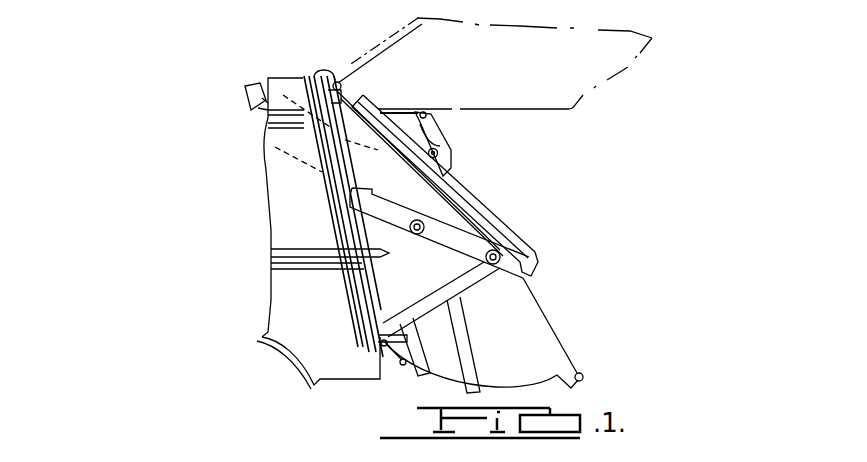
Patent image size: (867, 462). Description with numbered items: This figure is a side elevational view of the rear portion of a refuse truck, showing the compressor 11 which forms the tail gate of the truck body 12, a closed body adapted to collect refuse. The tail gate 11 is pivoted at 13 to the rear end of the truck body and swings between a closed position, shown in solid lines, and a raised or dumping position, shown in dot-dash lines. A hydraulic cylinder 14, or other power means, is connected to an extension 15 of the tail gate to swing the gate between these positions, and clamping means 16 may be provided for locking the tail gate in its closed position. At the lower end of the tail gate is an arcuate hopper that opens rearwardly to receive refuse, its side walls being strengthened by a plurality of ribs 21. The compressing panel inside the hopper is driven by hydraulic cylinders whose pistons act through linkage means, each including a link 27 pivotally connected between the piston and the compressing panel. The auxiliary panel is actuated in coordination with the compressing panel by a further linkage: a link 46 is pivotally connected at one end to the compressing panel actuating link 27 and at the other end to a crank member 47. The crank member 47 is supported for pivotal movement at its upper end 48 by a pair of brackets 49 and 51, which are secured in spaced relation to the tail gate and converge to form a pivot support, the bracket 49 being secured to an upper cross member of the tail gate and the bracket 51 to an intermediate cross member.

The compressor 11 is at (567, 303).
The truck body 12 is at (283, 220).
The pivot 13 is at (495, 63).
The hydraulic cylinder 14 is at (240, 118).
The extension 15 is at (268, 156).
The clamping means 16 is at (388, 355).
The rib 21 is at (453, 243).
The link 27 is at (535, 272).
The link 46 is at (500, 230).
The crank member 47 is at (439, 136).
The upper end 48 is at (447, 142).
The bracket 49 is at (398, 110).
The bracket 51 is at (440, 146).